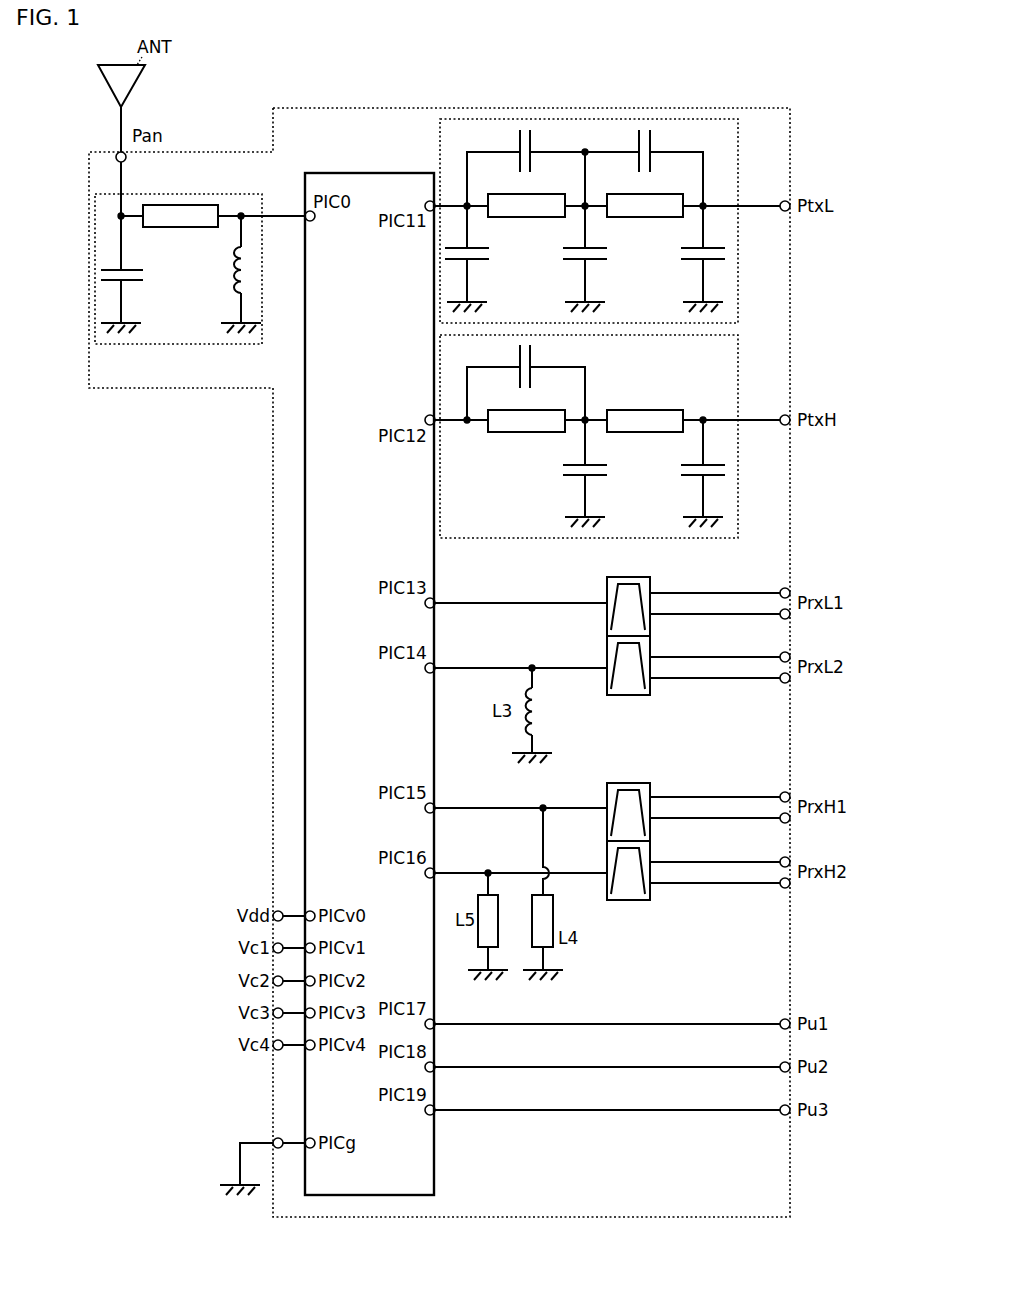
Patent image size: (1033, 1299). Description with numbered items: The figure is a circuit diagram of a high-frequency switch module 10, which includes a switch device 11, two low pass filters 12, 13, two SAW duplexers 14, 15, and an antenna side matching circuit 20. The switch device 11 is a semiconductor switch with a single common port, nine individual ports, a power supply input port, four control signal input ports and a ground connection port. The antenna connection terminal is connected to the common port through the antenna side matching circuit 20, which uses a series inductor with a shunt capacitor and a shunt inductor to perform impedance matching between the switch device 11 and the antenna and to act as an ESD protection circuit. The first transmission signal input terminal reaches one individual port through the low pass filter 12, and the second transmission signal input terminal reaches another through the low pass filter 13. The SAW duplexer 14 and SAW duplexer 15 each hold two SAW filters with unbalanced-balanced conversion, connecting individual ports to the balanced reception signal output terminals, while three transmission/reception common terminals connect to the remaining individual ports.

The high-frequency switch module 10 is at (763, 107).
The switch device 11 is at (399, 172).
The low pass filter 12 is at (738, 131).
The low pass filter 13 is at (738, 340).
The SAW duplexer 14 is at (666, 569).
The SAW duplexer 15 is at (666, 775).
The antenna side matching circuit 20 is at (163, 194).